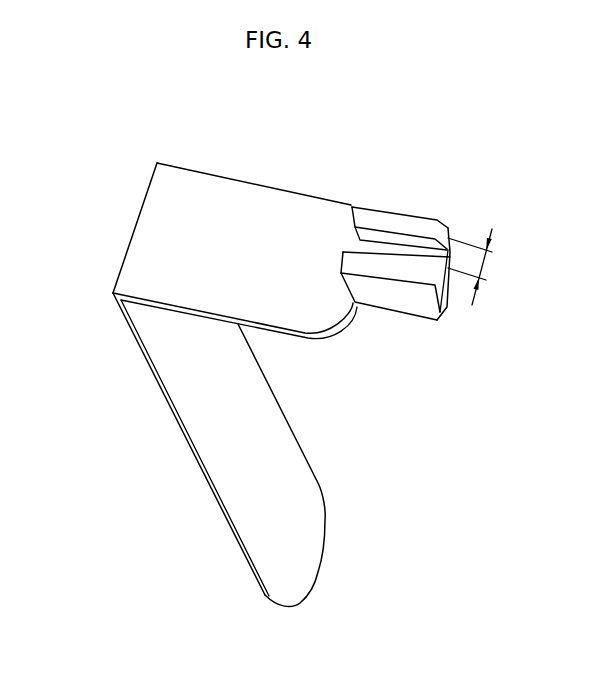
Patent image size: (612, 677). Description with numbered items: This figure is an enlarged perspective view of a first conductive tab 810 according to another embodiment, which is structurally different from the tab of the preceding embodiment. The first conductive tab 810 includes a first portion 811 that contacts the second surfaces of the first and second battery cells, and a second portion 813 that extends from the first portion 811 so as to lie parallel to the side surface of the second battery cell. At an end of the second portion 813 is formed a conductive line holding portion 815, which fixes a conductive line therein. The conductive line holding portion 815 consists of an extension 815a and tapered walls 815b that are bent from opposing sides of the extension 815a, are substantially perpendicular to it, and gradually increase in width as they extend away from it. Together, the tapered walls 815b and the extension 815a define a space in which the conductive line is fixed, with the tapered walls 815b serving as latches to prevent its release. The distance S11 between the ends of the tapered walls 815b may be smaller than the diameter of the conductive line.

The first conductive tab 810 is at (101, 156).
The first portion 811 is at (153, 357).
The second portion 813 is at (132, 250).
The conductive line holding portion 815 is at (450, 153).
The extension 815a is at (412, 253).
The tapered walls 815b is at (377, 220).
The distance between the ends of the tapered walls S11 is at (527, 225).